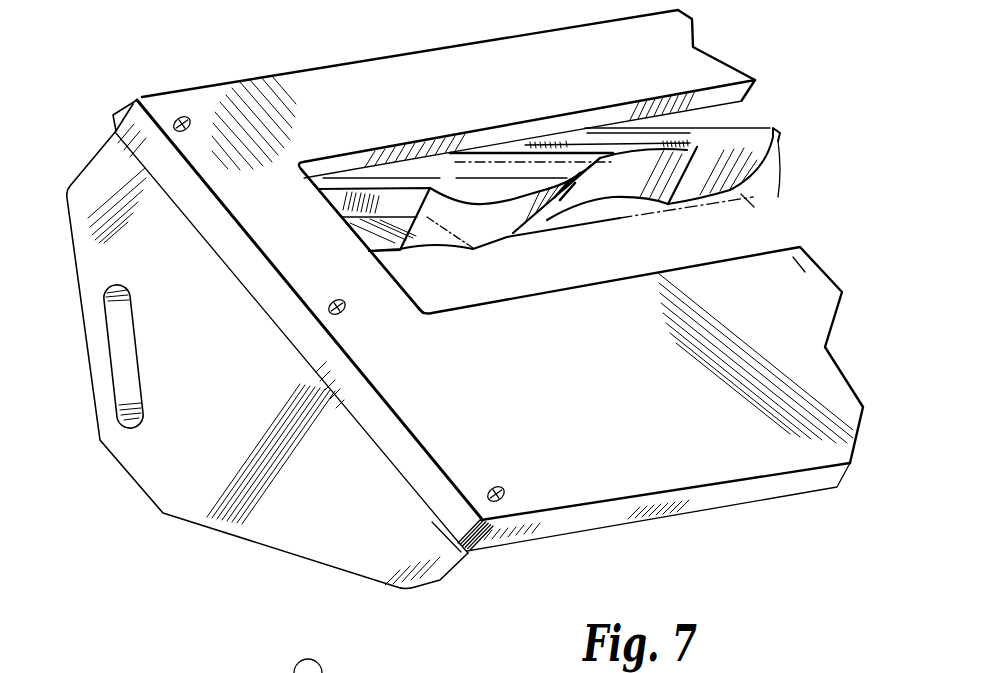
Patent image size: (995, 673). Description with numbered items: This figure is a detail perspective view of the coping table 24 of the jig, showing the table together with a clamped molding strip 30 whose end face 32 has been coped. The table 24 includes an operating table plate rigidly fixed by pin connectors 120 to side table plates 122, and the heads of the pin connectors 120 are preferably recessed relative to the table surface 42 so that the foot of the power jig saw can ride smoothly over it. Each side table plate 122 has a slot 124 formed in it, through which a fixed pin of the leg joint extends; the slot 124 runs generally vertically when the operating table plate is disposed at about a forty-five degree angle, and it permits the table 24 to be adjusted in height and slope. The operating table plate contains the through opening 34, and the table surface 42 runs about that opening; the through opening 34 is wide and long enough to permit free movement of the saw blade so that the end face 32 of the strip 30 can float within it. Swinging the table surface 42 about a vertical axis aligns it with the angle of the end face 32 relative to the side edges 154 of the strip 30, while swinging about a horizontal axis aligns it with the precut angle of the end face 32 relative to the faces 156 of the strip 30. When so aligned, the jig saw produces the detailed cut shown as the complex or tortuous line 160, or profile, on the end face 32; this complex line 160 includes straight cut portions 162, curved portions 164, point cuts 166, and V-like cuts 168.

The table 24 is at (317, 68).
The molding strip 30 is at (480, 188).
The end face 32 is at (778, 197).
The through opening 34 is at (462, 297).
The table surface 42 is at (577, 397).
The pin connectors 120 is at (186, 126).
The side table plates 122 is at (353, 503).
The slot 124 is at (137, 377).
The side edges 154 is at (778, 141).
The faces 156 is at (563, 167).
The complex line 160 is at (511, 198).
The straight cut portions 162 is at (382, 180).
The curved portions 164 is at (724, 150).
The point cuts 166 is at (661, 207).
The V-like cuts 168 is at (705, 155).